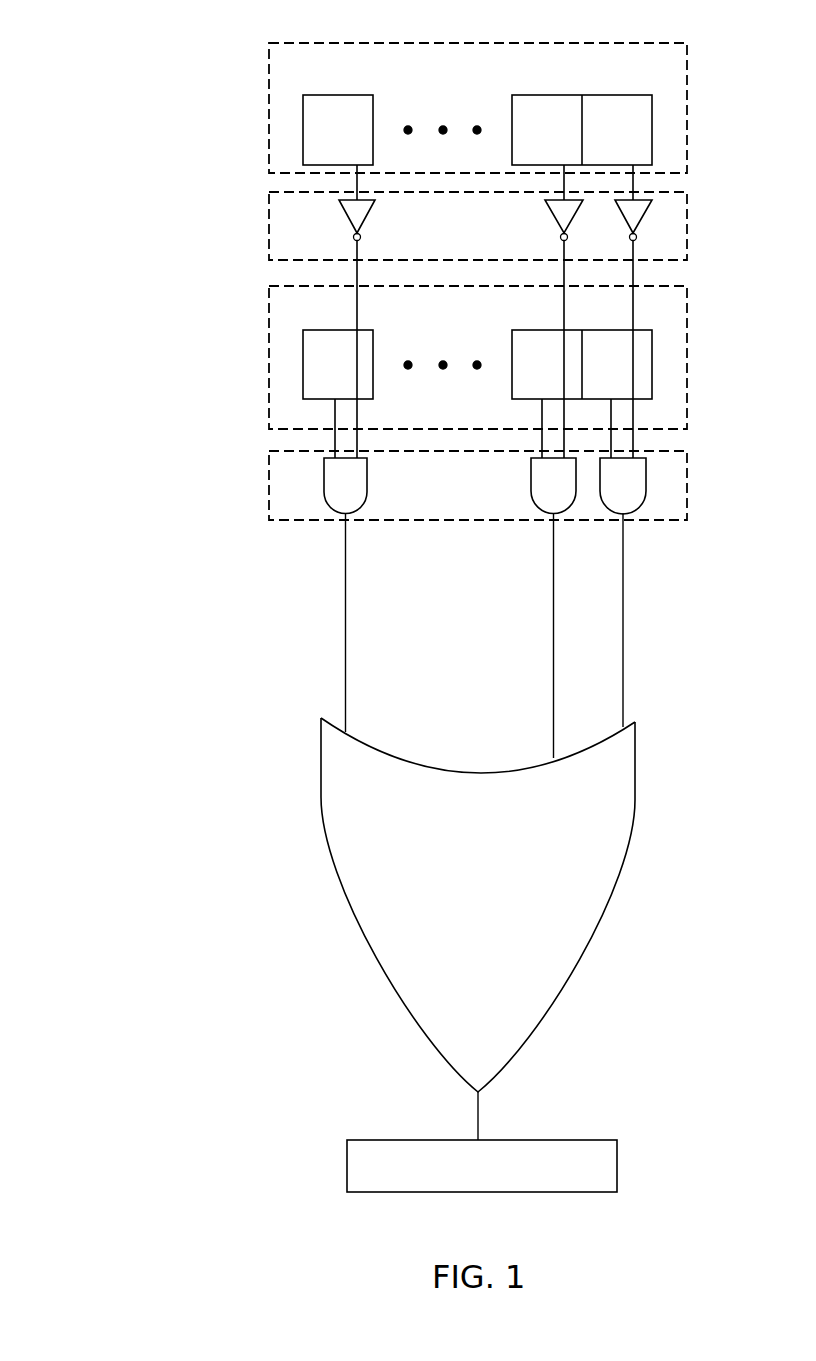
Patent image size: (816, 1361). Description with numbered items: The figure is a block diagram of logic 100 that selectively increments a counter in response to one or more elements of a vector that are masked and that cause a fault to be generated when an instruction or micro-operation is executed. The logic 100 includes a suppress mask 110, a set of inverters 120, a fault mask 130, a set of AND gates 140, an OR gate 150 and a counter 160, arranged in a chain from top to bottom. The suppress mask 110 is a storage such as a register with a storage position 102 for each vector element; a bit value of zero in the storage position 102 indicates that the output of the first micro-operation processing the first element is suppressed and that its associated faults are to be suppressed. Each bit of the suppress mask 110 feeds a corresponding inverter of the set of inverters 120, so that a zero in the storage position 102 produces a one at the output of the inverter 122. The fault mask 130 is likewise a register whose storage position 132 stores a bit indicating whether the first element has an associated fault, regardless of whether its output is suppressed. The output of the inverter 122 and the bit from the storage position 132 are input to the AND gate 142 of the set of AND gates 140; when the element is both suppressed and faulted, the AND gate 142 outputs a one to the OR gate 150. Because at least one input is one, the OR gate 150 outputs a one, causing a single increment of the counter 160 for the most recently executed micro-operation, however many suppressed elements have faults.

The logic 100 is at (118, 145).
The suppress mask 110 is at (269, 90).
The storage position 102 is at (340, 95).
The set of inverters 120 is at (269, 228).
The inverter 122 is at (348, 214).
The fault mask 130 is at (269, 338).
The storage position 132 is at (345, 330).
The set of AND gates 140 is at (269, 485).
The AND gate 142 is at (324, 492).
The OR gate 150 is at (321, 752).
The counter 160 is at (347, 1175).